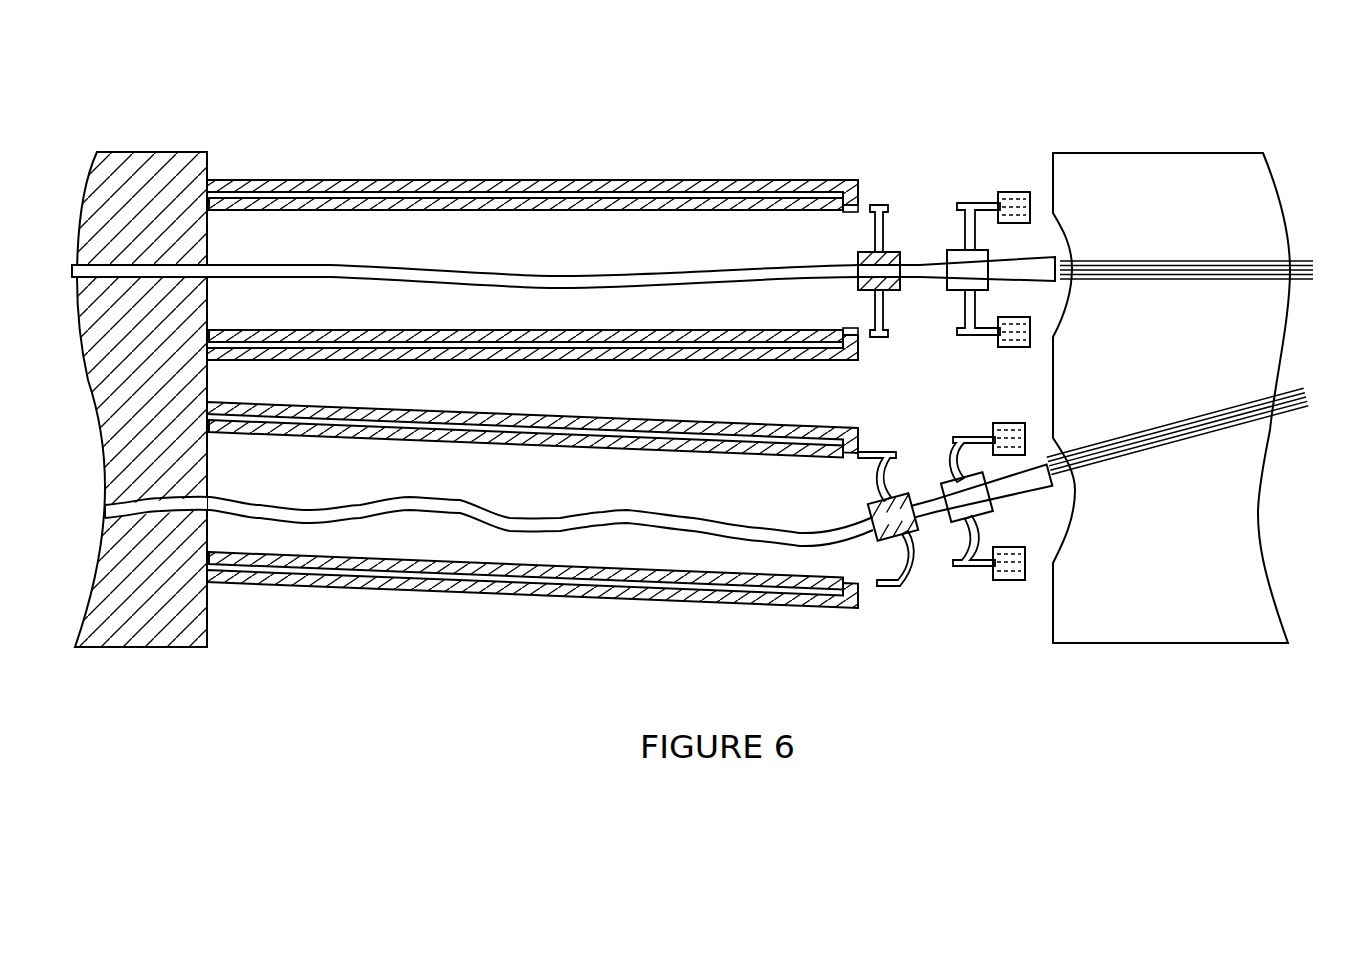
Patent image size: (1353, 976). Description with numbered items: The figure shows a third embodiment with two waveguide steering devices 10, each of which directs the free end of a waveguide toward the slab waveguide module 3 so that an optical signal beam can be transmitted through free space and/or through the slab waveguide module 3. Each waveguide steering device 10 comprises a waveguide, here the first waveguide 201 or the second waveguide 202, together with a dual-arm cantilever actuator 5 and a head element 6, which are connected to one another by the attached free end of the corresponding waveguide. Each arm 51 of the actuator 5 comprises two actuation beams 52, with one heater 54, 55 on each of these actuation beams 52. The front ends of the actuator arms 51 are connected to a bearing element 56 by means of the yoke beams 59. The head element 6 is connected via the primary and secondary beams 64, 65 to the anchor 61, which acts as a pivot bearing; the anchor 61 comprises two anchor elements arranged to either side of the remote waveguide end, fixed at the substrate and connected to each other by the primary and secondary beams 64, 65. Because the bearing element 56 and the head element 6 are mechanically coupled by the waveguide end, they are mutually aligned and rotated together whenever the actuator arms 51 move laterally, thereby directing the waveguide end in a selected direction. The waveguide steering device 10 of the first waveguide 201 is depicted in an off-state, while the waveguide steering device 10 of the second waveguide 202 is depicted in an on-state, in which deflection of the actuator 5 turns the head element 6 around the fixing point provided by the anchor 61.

The waveguide steering device 10 is at (852, 85).
The slab waveguide module 3 is at (1165, 192).
The dual-arm cantilever actuator 5 is at (740, 158).
The head element 6 is at (930, 228).
The arm 51 is at (669, 322).
The actuation beam 52 is at (413, 200).
The heater 54 is at (440, 181).
The heater 55 is at (438, 210).
The bearing element 56 is at (874, 287).
The yoke beam 59 is at (892, 223).
The anchor 61 is at (1008, 192).
The primary beam 64 is at (964, 233).
The secondary beam 65 is at (978, 337).
The first waveguide 201 is at (327, 264).
The second waveguide 202 is at (298, 527).